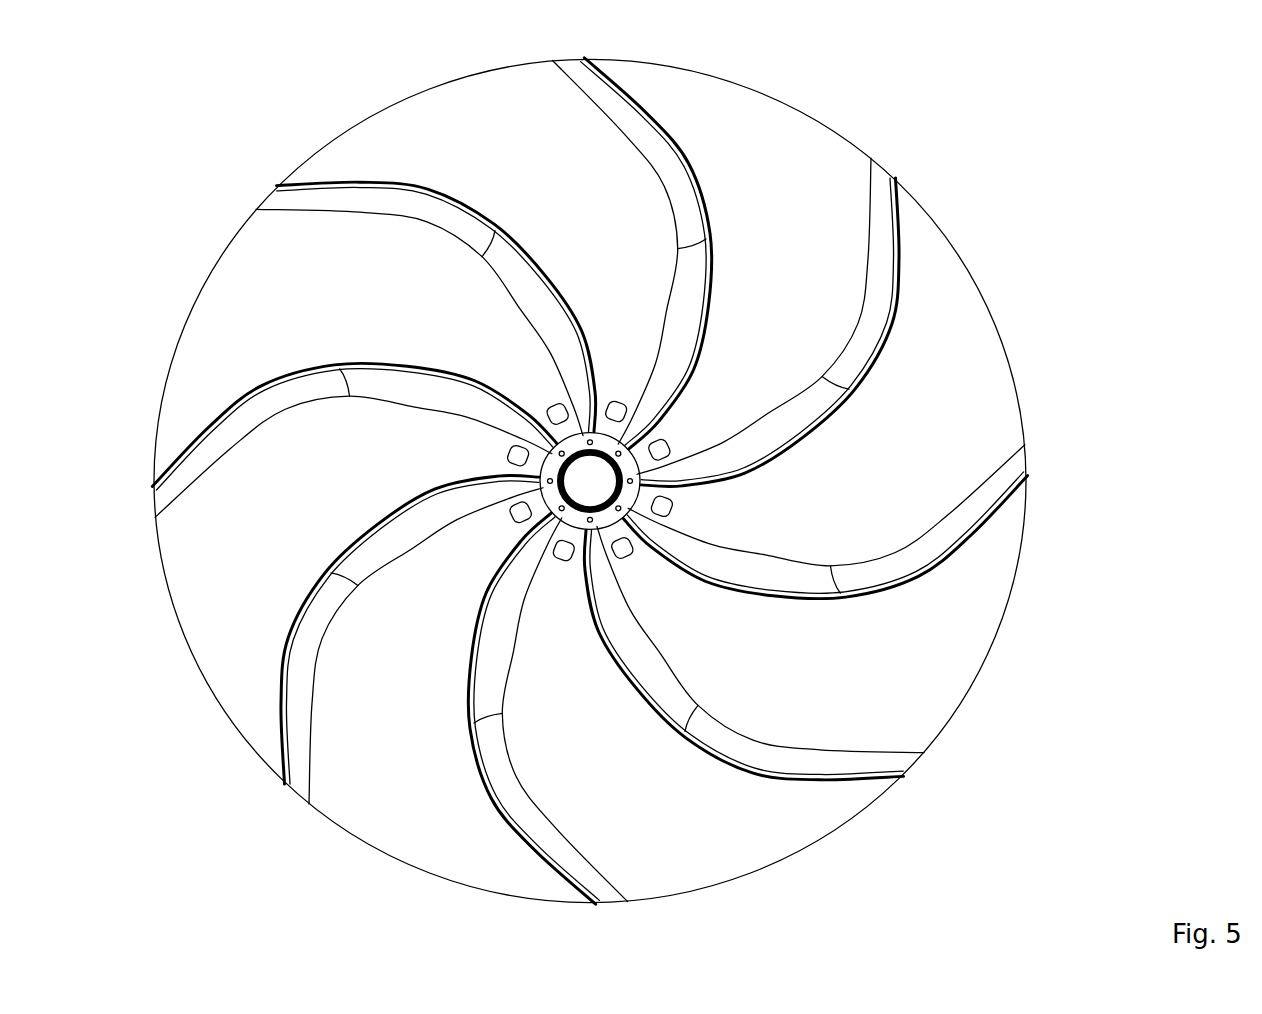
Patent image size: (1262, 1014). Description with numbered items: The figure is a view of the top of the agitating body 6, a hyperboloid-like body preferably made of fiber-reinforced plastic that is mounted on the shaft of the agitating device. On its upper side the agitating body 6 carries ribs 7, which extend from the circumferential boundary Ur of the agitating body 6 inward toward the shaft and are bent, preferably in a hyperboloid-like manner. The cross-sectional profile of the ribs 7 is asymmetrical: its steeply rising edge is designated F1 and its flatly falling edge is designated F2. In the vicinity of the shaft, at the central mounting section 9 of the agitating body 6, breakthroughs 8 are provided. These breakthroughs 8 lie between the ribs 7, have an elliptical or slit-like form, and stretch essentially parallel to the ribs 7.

The agitating body 6 is at (1030, 298).
The ribs 7 is at (510, 823).
The breakthroughs 8 is at (668, 507).
The mounting section 9 is at (665, 448).
The steep edge F1 is at (472, 755).
The flat falling edge F2 is at (600, 877).
The circumferential boundary Ur is at (833, 832).